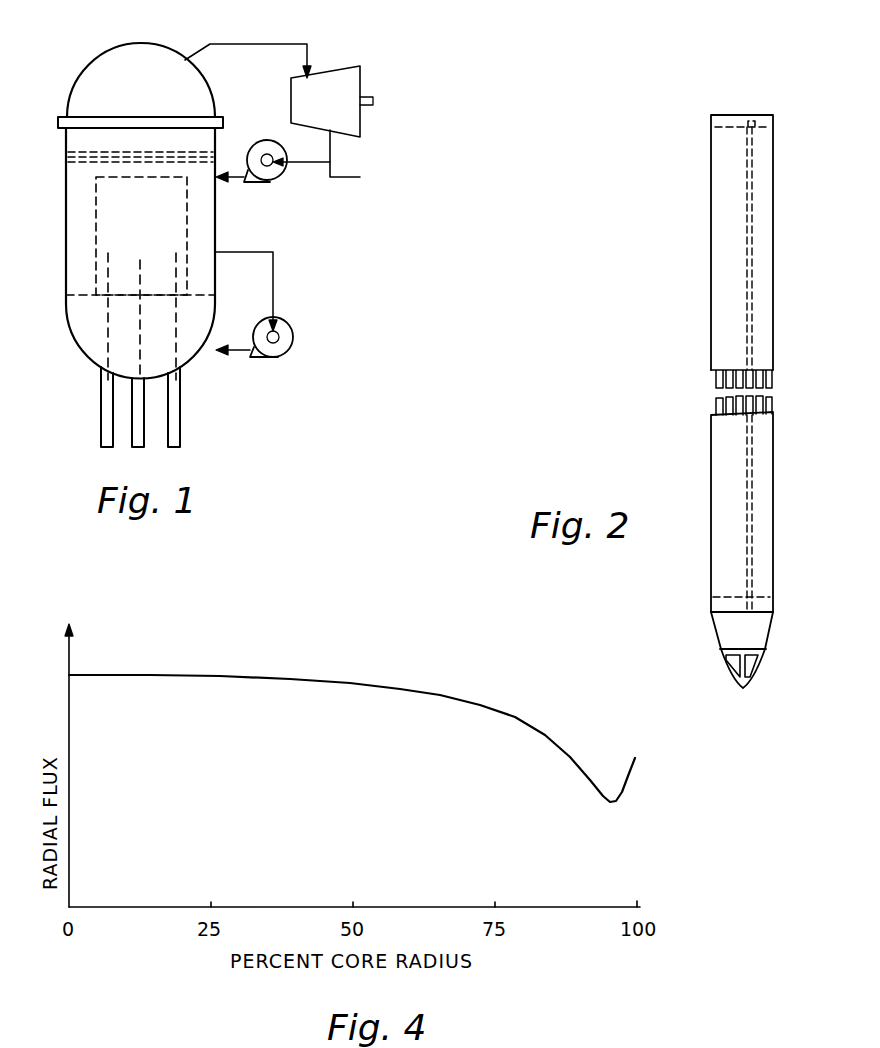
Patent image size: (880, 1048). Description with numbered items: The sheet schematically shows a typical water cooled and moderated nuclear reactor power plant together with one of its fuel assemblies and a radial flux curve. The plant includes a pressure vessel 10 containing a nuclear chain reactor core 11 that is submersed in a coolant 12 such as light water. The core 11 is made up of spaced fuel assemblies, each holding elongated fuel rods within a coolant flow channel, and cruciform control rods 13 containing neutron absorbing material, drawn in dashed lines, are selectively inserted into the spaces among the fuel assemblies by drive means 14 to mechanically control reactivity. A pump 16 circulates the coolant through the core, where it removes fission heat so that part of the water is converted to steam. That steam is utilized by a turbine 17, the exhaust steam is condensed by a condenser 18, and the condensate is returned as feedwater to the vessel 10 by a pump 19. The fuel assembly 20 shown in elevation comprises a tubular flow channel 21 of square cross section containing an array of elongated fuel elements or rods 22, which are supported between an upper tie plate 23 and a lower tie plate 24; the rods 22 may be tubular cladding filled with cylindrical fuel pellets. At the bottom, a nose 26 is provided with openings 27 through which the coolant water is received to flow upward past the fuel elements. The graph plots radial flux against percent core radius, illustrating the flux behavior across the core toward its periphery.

In FIG. 1, the pressure vessel 10 is at (66, 228).
In FIG. 1, the nuclear chain reactor core 11 is at (110, 177).
In FIG. 1, the coolant 12 is at (70, 152).
In FIG. 1, the control rods 13 is at (105, 323).
In FIG. 1, the drive means 14 is at (101, 414).
In FIG. 1, the pump 16 is at (276, 358).
In FIG. 1, the turbine 17 is at (335, 68).
In FIG. 1, the condenser 18 is at (343, 178).
In FIG. 1, the pump 19 is at (265, 141).
In FIG. 2, the fuel assembly 20 is at (780, 231).
In FIG. 2, the tubular flow channel 21 is at (776, 318).
In FIG. 2, the fuel elements or rods 22 is at (752, 456).
In FIG. 2, the upper tie plate 23 is at (771, 122).
In FIG. 2, the lower tie plate 24 is at (768, 604).
In FIG. 2, the nose 26 is at (766, 657).
In FIG. 2, the openings 27 is at (750, 672).